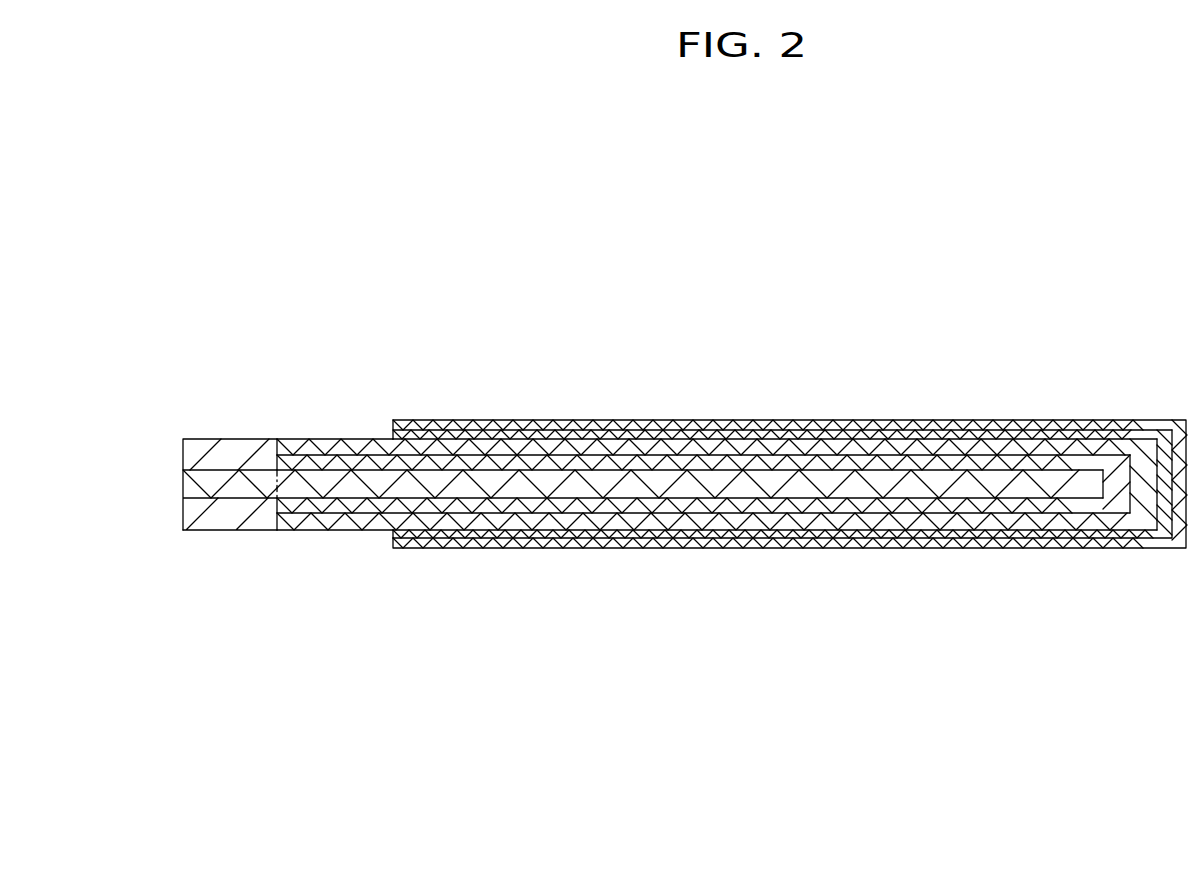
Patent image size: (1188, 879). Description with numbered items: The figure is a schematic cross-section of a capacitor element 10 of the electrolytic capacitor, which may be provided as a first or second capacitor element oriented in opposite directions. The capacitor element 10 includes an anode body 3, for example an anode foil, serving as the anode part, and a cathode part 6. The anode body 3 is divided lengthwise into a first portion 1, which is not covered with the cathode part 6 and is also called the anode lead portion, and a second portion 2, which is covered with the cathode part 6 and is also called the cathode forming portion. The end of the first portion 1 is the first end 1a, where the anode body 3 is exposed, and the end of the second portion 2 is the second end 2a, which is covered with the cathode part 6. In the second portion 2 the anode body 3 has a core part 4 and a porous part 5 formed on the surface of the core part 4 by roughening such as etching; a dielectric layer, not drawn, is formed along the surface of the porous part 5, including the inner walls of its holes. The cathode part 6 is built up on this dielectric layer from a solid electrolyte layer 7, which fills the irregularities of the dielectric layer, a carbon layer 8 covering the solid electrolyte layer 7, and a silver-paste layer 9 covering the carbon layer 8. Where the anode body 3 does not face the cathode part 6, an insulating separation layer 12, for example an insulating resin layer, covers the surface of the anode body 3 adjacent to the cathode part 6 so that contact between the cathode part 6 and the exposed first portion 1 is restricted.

The first portion 1 is at (237, 486).
The first end 1a is at (174, 487).
The second portion 2 is at (523, 362).
The second end 2a is at (1113, 485).
The anode body 3 is at (287, 320).
The core part 4 is at (449, 487).
The porous part 5 is at (492, 462).
The cathode part 6 is at (630, 349).
The solid electrolyte layer 7 is at (631, 450).
The carbon layer 8 is at (727, 437).
The silver-paste layer 9 is at (814, 427).
The capacitor element 10 is at (987, 257).
The insulating separation layer 12 is at (228, 516).